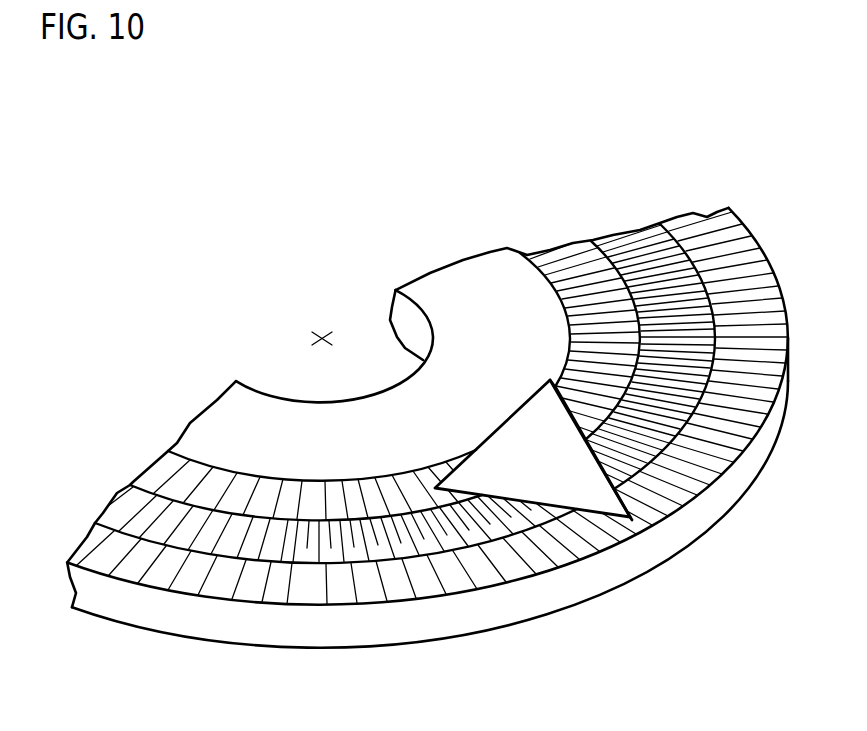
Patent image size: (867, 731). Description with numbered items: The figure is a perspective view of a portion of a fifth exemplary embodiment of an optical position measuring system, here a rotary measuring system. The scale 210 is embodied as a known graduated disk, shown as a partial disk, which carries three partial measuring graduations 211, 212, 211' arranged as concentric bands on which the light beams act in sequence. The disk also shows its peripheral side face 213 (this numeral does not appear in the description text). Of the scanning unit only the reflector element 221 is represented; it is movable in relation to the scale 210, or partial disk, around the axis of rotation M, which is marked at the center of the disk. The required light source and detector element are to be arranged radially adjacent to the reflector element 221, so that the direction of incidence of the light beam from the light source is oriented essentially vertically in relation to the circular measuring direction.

The scale 210 is at (410, 409).
The partial measuring graduation 211 is at (396, 333).
The partial measuring graduation 212 is at (633, 262).
The partial measuring graduation 211' is at (432, 350).
The outer peripheral side surface 213 is at (180, 617).
The reflector element 221 is at (598, 497).
The axis of rotation M is at (325, 331).